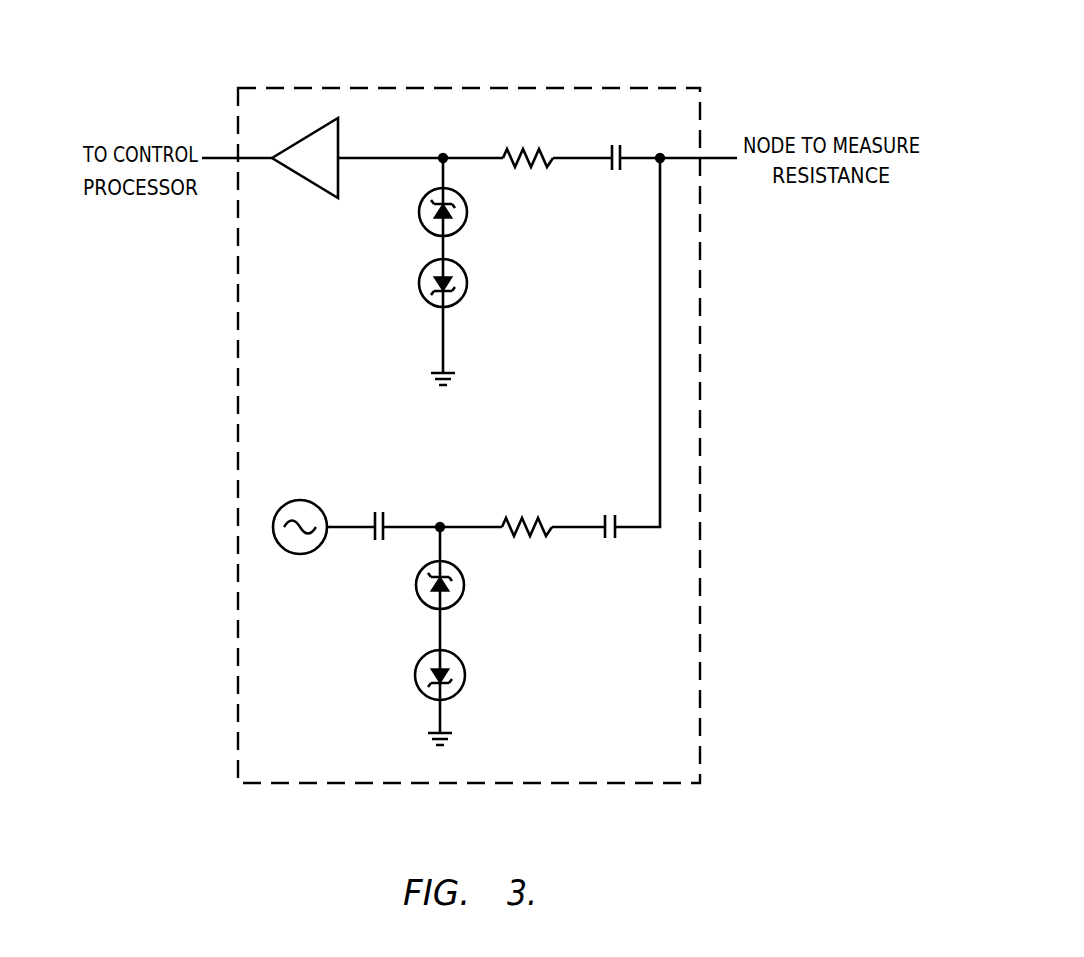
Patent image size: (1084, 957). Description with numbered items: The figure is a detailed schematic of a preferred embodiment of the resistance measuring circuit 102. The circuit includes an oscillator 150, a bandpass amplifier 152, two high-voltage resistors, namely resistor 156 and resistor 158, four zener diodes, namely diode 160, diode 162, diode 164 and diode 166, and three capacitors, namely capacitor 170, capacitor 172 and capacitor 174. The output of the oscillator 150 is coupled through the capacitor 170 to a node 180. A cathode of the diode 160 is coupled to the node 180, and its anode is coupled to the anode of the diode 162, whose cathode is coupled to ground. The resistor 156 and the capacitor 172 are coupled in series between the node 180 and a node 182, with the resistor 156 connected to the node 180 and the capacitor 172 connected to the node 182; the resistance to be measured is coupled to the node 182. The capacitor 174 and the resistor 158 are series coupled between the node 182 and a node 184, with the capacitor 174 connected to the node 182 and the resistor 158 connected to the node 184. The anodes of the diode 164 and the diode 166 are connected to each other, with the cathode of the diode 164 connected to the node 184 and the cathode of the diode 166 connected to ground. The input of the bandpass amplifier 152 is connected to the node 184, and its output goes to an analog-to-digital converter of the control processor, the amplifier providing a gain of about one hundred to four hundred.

The resistance measuring circuit 102 is at (700, 102).
The oscillator 150 is at (310, 502).
The bandpass amplifier 152 is at (338, 118).
The resistor 156 is at (522, 518).
The resistor 158 is at (530, 150).
The diode 160 is at (462, 591).
The diode 162 is at (465, 675).
The diode 164 is at (465, 218).
The diode 166 is at (465, 289).
The capacitor 170 is at (377, 512).
The capacitor 172 is at (610, 515).
The capacitor 174 is at (612, 145).
The node 180 is at (440, 524).
The node 182 is at (660, 155).
The node 184 is at (445, 156).